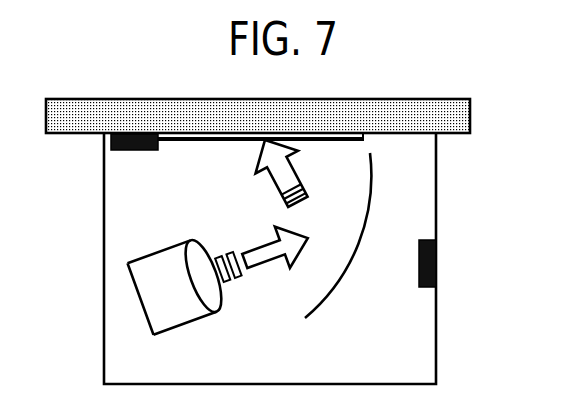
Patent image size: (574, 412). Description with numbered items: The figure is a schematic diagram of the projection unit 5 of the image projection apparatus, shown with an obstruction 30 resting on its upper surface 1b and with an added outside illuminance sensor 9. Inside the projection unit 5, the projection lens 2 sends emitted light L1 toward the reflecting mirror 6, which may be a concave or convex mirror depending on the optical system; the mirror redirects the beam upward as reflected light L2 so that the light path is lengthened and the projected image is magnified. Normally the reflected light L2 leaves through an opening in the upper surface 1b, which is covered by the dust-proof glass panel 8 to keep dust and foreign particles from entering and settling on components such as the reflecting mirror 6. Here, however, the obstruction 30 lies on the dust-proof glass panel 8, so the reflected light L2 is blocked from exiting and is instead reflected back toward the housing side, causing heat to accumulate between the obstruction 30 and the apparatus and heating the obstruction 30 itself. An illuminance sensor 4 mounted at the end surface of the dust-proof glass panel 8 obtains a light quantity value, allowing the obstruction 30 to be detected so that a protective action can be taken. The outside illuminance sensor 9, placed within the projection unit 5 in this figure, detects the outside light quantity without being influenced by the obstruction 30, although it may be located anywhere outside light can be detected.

The upper surface 1b is at (413, 133).
The projection lens 2 is at (178, 320).
The illuminance sensor 4 is at (133, 137).
The projection unit 5 is at (438, 221).
The reflecting mirror 6 is at (358, 247).
The dust-proof glass panel 8 is at (228, 140).
The outside illuminance sensor 9 is at (427, 265).
The obstruction 30 is at (471, 112).
The emitted light L1 is at (272, 262).
The reflected light L2 is at (291, 170).